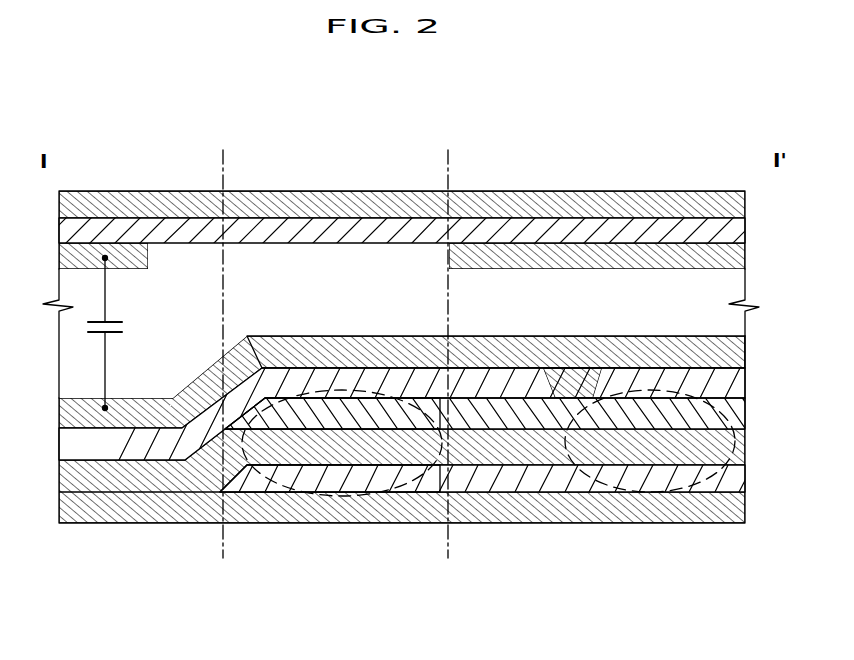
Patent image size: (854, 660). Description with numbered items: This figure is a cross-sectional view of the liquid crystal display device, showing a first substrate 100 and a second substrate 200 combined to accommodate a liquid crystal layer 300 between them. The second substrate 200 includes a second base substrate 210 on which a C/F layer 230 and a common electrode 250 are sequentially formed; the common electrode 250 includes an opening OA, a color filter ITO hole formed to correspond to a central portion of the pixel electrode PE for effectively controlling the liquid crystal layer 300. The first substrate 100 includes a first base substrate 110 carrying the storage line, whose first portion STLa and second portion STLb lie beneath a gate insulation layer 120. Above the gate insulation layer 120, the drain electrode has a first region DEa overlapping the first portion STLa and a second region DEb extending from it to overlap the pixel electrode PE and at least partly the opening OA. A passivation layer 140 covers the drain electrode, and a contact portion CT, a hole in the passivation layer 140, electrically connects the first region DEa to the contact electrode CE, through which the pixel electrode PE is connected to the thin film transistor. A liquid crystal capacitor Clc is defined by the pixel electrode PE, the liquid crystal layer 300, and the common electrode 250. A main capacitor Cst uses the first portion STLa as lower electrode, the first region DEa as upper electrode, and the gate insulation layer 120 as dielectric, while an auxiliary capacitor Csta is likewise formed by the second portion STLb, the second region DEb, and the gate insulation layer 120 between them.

The second substrate 200 is at (648, 168).
The second base substrate 210 is at (737, 202).
The C/F layer 230 is at (737, 228).
The common electrode 250 is at (737, 258).
The liquid crystal layer 300 is at (737, 290).
The opening OA is at (318, 270).
The liquid crystal capacitor Clc is at (125, 333).
The first substrate 100 is at (672, 554).
The first base substrate 110 is at (737, 506).
The gate insulation layer 120 is at (737, 446).
The passivation layer 140 is at (737, 384).
The pixel electrode PE is at (68, 413).
The contact electrode CE is at (737, 353).
The contact portion CT is at (573, 378).
The first region of the drain electrode DEa is at (737, 413).
The second region of the drain electrode DEb is at (386, 422).
The first portion of the storage line STLa is at (737, 483).
The second portion of the storage line STLb is at (348, 480).
The auxiliary capacitor Csta is at (288, 483).
The main capacitor Cst is at (602, 485).